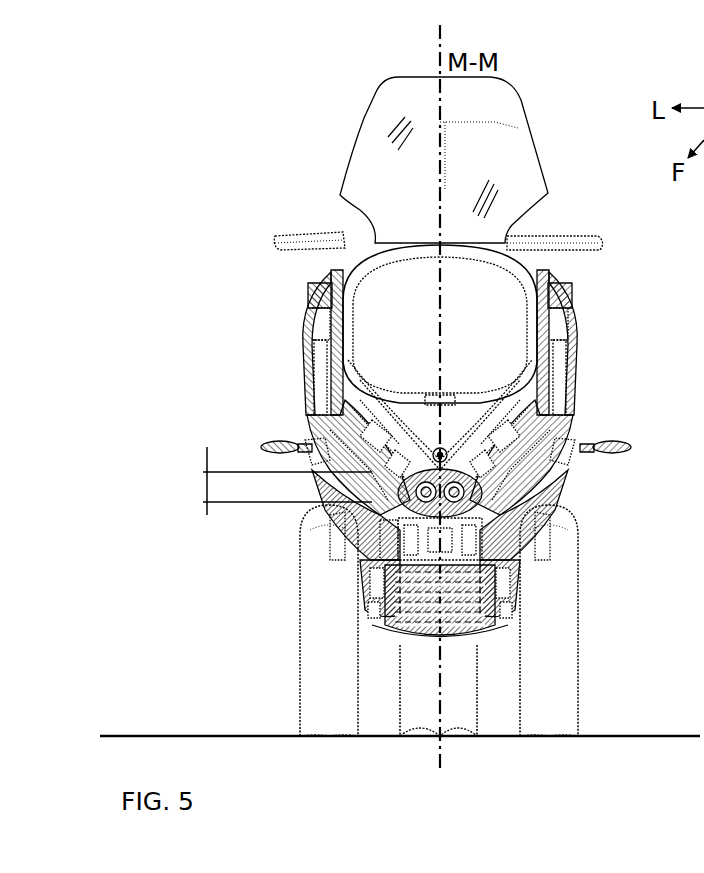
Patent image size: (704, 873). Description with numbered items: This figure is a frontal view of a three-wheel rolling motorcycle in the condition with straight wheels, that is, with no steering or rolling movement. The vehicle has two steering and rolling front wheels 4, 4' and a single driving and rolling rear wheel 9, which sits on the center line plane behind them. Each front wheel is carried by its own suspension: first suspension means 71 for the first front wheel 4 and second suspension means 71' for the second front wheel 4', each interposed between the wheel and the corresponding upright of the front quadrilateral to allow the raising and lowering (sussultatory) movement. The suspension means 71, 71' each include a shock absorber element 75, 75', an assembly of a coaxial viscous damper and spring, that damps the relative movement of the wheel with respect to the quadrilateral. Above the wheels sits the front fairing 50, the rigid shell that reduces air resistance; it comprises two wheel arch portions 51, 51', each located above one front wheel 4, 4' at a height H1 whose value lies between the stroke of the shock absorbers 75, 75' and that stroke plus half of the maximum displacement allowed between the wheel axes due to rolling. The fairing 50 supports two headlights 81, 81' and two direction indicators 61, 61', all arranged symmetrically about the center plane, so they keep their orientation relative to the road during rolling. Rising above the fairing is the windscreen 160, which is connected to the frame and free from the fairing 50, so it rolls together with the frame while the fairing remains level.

The windscreen 160 is at (413, 148).
The front fairing 50 is at (343, 262).
The headlight 81 is at (564, 423).
The headlight 81' is at (313, 403).
The direction indicator 61 is at (627, 426).
The direction indicator 61' is at (269, 412).
The wheel arch portion 51 is at (569, 515).
The wheel arch portion 51' is at (244, 515).
The shock absorber element 75 is at (530, 514).
The shock absorber element 75' is at (300, 553).
The first suspension means 71 is at (576, 609).
The second suspension means 71' is at (277, 611).
The front wheel 4 is at (594, 620).
The front wheel 4' is at (259, 620).
The rear wheel 9 is at (470, 707).
The height H1 is at (200, 486).